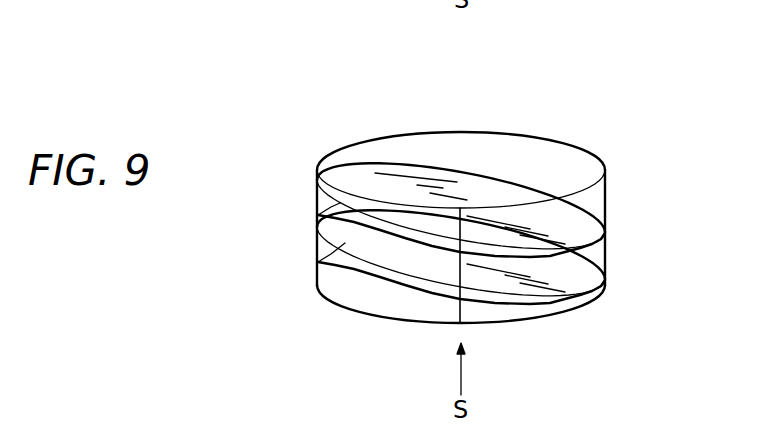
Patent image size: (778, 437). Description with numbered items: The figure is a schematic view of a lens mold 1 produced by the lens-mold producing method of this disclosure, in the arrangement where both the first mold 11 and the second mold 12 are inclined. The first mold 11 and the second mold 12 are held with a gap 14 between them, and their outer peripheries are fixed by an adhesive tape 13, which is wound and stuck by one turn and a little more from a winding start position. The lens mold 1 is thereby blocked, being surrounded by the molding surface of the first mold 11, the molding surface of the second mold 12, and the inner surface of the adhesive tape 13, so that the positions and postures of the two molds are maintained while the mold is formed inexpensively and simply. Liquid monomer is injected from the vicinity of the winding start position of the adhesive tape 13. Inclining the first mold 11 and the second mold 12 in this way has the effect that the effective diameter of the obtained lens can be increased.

The lens mold 1 is at (381, 126).
The first mold 11 is at (582, 220).
The second mold 12 is at (578, 279).
The adhesive tape 13 is at (537, 137).
The gap 14 is at (352, 242).